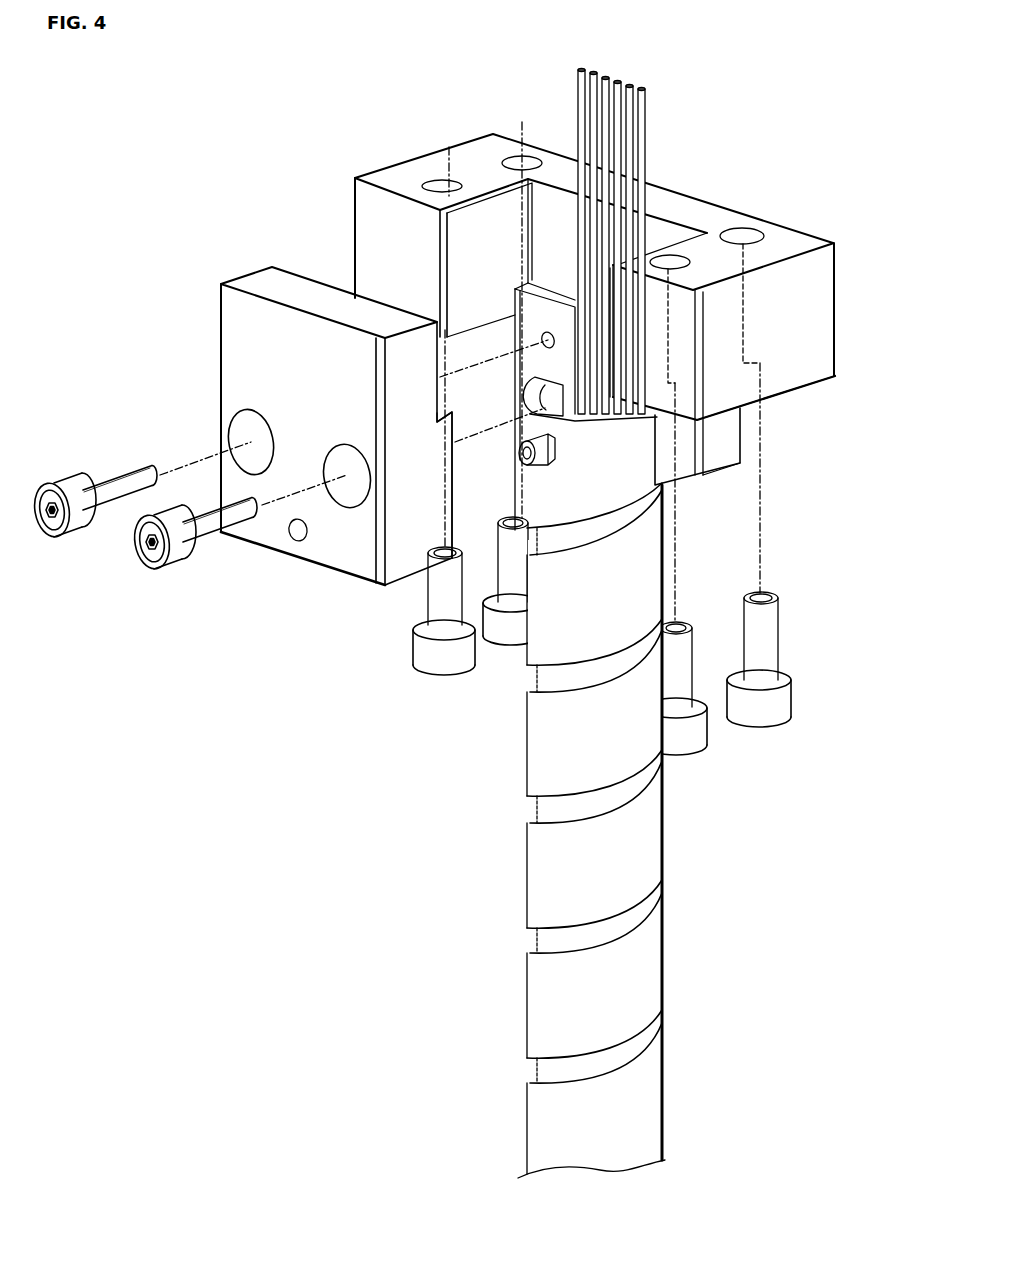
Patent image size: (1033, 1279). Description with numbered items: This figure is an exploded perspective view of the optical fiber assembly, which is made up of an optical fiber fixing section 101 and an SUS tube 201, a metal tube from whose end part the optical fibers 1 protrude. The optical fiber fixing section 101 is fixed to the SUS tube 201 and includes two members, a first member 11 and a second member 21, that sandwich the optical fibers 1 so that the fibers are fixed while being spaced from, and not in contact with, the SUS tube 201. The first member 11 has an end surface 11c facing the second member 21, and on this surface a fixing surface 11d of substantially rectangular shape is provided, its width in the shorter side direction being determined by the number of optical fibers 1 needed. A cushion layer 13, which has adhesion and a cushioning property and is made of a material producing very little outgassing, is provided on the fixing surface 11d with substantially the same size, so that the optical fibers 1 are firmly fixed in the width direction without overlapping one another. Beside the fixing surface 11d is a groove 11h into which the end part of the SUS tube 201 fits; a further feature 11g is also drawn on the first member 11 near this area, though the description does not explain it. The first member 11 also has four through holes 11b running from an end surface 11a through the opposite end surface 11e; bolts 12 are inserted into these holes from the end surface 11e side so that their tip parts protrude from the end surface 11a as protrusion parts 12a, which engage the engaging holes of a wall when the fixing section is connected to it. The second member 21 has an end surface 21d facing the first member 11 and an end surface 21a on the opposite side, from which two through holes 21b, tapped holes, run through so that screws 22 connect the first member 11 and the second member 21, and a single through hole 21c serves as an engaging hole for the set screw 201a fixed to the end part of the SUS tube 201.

The optical fibers 1 is at (641, 104).
The first member 11 is at (602, 350).
The end surface 11a is at (729, 393).
The through holes 11b is at (750, 233).
The end surface 11c is at (557, 210).
The fixing surface 11d is at (587, 315).
The end surface 11e is at (806, 390).
The screw hole 11g is at (546, 334).
The groove 11h is at (642, 447).
The bolts 12 is at (433, 665).
The protrusion parts 12a is at (507, 555).
The cushion layer 13 is at (615, 404).
The second member 21 is at (316, 430).
The end surface 21a is at (233, 337).
The through holes 21b is at (240, 434).
The through hole 21c is at (297, 542).
The end surface 21d is at (455, 472).
The screws 22 is at (77, 537).
The optical fiber fixing section 101 is at (617, 350).
The SUS tube 201 is at (681, 777).
The set screw 201a is at (553, 447).